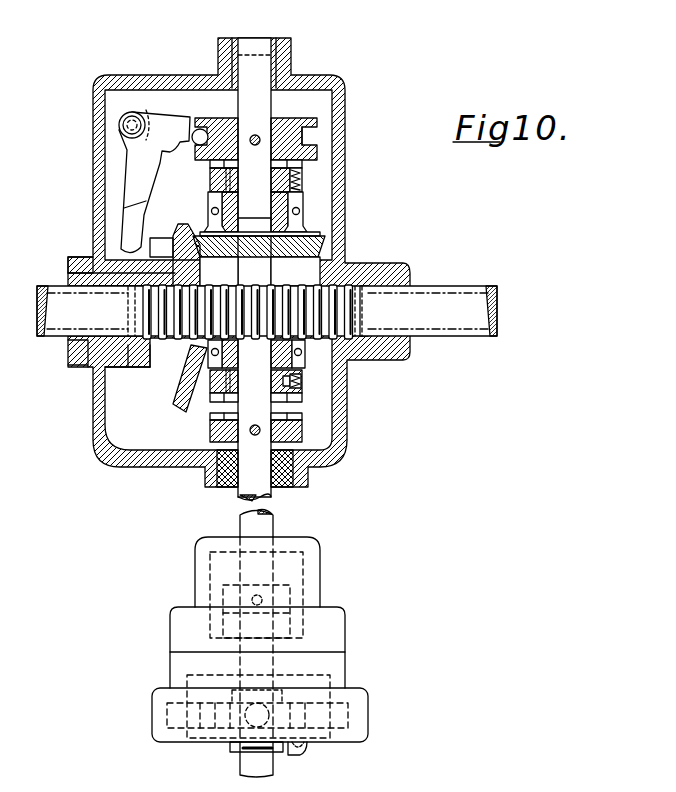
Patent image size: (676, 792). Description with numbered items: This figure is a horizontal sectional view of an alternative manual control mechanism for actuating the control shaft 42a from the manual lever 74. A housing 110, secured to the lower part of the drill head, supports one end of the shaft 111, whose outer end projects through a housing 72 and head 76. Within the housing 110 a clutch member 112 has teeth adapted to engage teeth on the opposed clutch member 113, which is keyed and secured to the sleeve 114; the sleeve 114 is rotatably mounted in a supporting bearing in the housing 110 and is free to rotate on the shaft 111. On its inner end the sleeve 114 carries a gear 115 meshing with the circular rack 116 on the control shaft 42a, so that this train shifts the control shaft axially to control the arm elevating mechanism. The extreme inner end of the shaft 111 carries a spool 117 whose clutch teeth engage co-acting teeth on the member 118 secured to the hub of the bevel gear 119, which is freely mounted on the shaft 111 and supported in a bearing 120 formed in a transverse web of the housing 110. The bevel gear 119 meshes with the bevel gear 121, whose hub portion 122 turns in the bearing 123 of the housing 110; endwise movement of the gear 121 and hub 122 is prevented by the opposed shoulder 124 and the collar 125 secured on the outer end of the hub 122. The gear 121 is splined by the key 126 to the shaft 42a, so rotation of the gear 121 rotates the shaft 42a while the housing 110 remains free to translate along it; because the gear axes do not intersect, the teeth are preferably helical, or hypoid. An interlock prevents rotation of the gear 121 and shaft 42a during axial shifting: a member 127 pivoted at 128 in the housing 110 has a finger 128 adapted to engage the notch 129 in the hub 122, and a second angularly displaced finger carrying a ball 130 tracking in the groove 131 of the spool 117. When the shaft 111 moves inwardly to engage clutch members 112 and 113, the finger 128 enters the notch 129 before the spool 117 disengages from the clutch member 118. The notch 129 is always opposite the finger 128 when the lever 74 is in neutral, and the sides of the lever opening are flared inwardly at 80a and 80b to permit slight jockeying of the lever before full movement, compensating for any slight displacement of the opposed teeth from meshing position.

The housing 110 is at (345, 148).
The shaft 111 is at (272, 518).
The clutch member 112 is at (297, 428).
The clutch member 113 is at (212, 392).
The sleeve 114 is at (290, 363).
The gear 115 is at (314, 290).
The circular rack 116 is at (380, 300).
The spool 117 is at (285, 135).
The clutch member 118 is at (210, 180).
The bevel gear 119 is at (322, 240).
The bearing 120 is at (297, 200).
The bevel gear 121 is at (178, 392).
The hub portion 122 is at (67, 276).
The bearing 123 is at (127, 368).
The shoulder 124 is at (158, 360).
The collar 125 is at (78, 257).
The key 126 is at (70, 340).
The interlock member 127 is at (165, 125).
The finger 128 is at (136, 108).
The notch 129 is at (160, 256).
The ball 130 is at (201, 129).
The groove 131 is at (310, 135).
The control shaft 42a is at (202, 311).
The housing 72 is at (340, 612).
The head 76 is at (345, 665).
The manual lever 74 is at (243, 766).
The flared side of opening 80a is at (230, 747).
The flared side of opening 80b is at (303, 752).